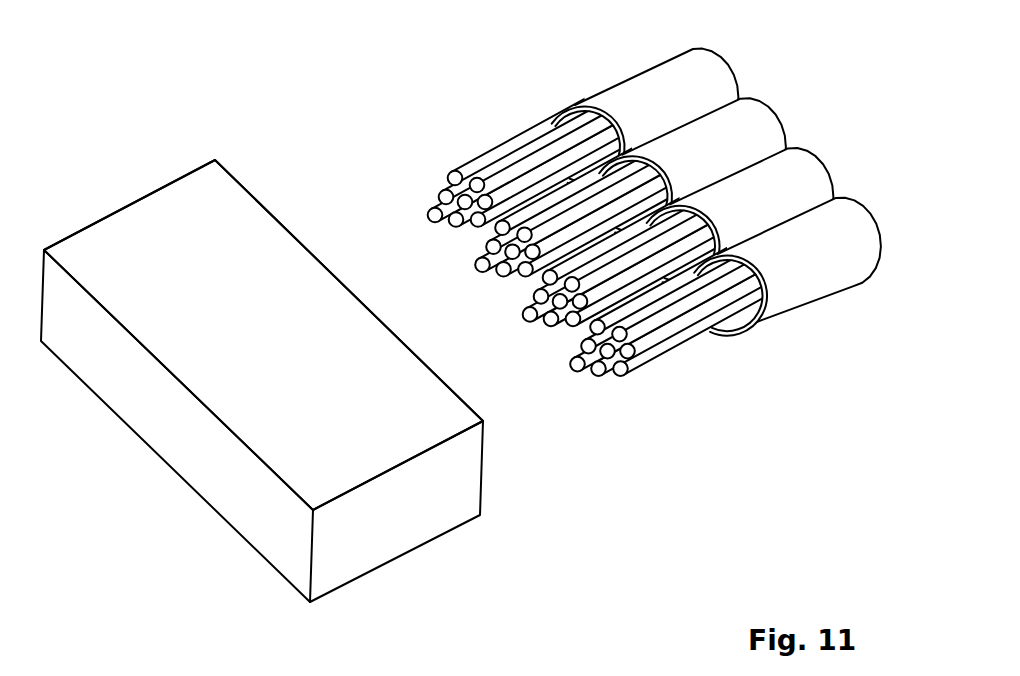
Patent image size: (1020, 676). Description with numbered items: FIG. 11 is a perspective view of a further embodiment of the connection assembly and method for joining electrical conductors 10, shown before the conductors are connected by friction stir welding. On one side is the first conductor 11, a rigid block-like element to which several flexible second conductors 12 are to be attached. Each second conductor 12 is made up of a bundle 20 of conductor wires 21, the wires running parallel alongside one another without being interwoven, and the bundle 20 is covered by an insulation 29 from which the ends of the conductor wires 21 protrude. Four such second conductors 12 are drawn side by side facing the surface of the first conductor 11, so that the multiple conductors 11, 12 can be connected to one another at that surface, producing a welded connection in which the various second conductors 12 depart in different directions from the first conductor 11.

The electrical conductors 10 is at (181, 293).
The first conductor 11 is at (237, 368).
The second conductor 12 is at (636, 231).
The bundle 20 is at (529, 270).
The conductor wires 21 is at (450, 177).
The insulation 29 is at (654, 64).